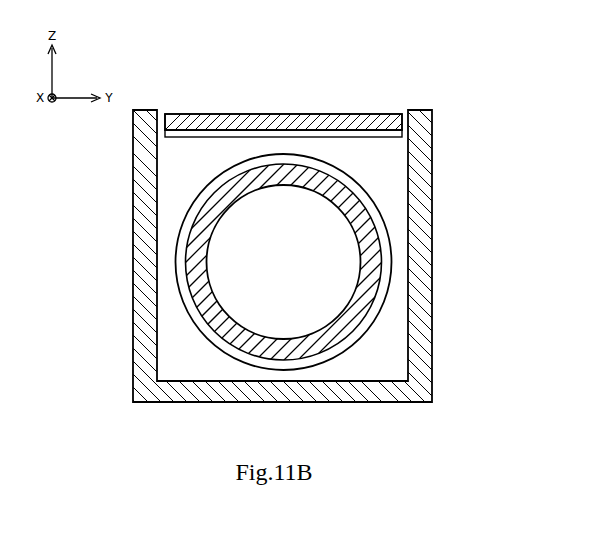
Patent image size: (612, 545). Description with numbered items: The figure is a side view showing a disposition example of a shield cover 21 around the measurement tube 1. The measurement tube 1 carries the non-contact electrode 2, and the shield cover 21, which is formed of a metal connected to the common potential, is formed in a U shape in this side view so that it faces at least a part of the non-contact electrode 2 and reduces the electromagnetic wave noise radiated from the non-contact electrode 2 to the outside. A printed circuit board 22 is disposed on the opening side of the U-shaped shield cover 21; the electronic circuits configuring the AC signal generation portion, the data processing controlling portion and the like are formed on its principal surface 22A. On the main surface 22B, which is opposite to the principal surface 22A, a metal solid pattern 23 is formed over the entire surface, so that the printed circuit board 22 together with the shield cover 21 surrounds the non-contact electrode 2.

The measurement tube 1 is at (190, 270).
The non-contact electrode 2 is at (180, 238).
The shield cover 21 is at (422, 134).
The printed circuit board 22 is at (243, 113).
The principal surface 22A is at (352, 113).
The main surface 22B is at (388, 113).
The metal solid pattern 23 is at (185, 138).